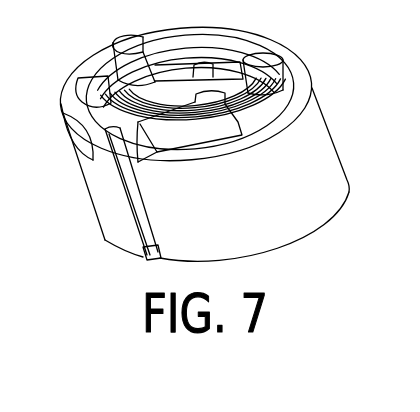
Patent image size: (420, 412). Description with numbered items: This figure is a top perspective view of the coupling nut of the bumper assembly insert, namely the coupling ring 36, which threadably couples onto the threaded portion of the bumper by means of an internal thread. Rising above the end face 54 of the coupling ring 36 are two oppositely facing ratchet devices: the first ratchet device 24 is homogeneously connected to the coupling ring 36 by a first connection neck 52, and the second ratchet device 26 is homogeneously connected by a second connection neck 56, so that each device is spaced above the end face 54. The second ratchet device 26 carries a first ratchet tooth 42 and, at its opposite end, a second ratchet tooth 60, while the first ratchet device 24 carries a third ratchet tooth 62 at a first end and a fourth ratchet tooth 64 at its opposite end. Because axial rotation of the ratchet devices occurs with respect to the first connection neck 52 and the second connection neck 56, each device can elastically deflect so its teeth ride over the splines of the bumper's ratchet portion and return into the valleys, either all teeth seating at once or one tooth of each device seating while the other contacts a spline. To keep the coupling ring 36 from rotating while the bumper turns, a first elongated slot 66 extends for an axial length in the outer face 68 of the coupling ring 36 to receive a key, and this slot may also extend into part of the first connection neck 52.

The first ratchet device 24 is at (83, 126).
The second ratchet device 26 is at (263, 46).
The coupling ring 36 is at (318, 158).
The first ratchet tooth 42 is at (277, 60).
The first connection neck 52 is at (133, 155).
The end face 54 is at (305, 88).
The second connection neck 56 is at (201, 68).
The second ratchet tooth 60 is at (130, 43).
The third ratchet tooth 62 is at (203, 97).
The fourth ratchet tooth 64 is at (92, 82).
The first elongated slot 66 is at (148, 258).
The outer face 68 is at (103, 240).